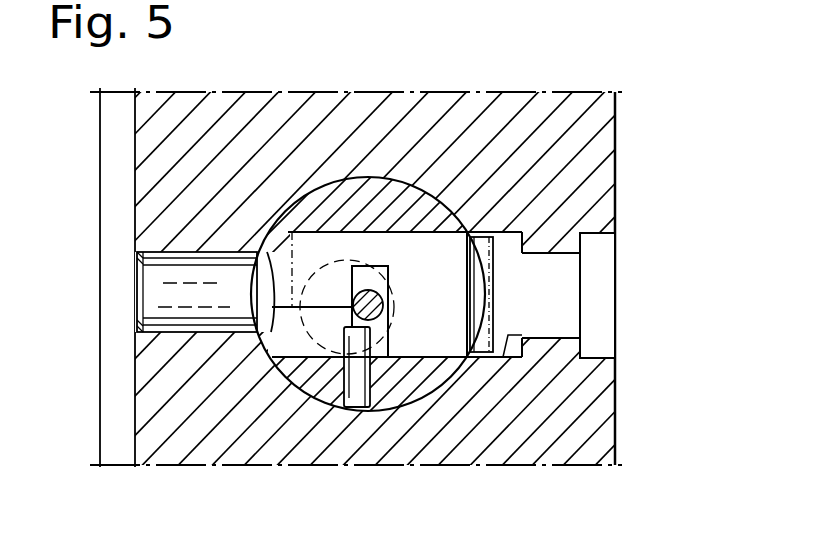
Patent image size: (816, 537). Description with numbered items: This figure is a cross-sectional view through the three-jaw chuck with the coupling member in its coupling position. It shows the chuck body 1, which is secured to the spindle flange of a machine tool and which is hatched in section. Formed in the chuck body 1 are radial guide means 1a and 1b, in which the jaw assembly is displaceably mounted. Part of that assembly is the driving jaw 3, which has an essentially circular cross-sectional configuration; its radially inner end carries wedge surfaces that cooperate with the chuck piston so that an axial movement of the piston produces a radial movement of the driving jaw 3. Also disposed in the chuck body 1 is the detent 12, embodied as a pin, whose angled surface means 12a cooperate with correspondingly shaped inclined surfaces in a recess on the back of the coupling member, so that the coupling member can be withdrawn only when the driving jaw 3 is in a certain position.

The chuck body 1 is at (588, 143).
The radial guide means 1a is at (344, 185).
The radial guide means 1b is at (602, 235).
The driving jaw 3 is at (405, 195).
The detent 12 is at (163, 293).
The angled surface means 12a is at (262, 266).